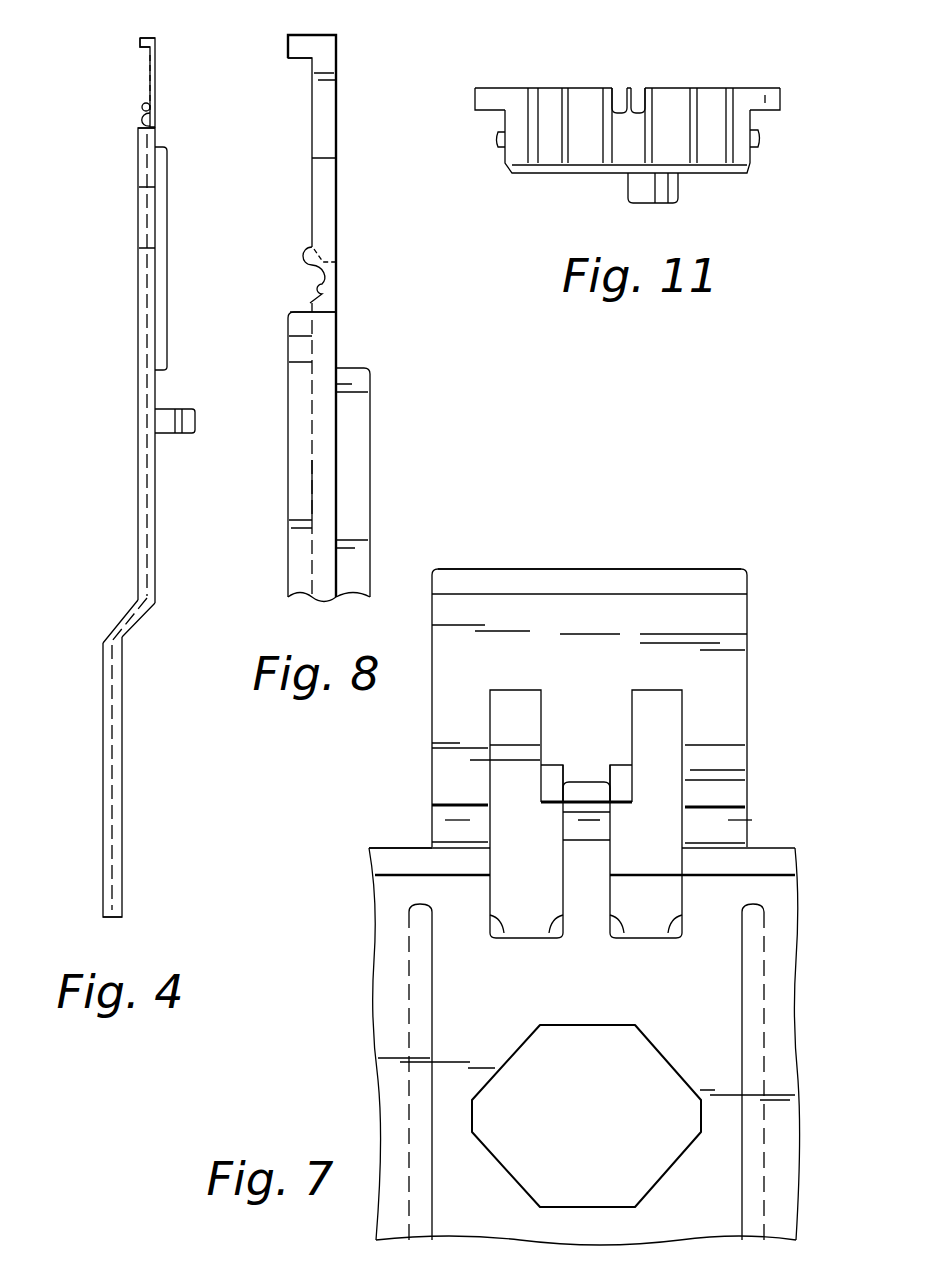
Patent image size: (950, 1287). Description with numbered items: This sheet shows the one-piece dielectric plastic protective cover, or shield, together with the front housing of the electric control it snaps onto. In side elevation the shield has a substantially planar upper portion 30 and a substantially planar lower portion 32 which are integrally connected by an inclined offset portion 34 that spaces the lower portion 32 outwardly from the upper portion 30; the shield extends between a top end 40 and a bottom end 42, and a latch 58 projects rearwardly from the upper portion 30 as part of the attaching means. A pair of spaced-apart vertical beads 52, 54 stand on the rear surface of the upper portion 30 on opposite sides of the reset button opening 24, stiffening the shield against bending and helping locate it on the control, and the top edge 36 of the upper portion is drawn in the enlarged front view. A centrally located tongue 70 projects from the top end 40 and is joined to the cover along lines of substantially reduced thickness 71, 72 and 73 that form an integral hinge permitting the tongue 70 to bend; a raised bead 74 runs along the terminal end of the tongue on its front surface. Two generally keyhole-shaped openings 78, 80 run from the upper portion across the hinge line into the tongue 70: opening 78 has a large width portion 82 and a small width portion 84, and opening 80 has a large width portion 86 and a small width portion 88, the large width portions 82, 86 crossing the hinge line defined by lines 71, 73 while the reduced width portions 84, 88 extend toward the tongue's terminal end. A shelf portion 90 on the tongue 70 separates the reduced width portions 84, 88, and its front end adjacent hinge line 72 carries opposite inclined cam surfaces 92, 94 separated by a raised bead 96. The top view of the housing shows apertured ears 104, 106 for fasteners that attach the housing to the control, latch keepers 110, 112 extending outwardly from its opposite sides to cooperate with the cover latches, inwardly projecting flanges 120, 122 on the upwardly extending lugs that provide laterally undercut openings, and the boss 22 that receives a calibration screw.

In FIG. 11, the boss 22 is at (662, 204).
In FIG. 8, the opening 24 is at (315, 490).
In FIG. 7, the opening 24 is at (660, 1052).
In FIG. 4, the upper portion 30 is at (138, 255).
In FIG. 8, the upper portion 30 is at (288, 380).
In FIG. 7, the upper portion 30 is at (785, 925).
In FIG. 4, the lower portion 32 is at (103, 738).
In FIG. 4, the inclined offset portion 34 is at (118, 625).
In FIG. 7, the top edge of strip 36 is at (775, 867).
In FIG. 4, the top end 40 is at (138, 128).
In FIG. 8, the top end 40 is at (298, 310).
In FIG. 7, the top end 40 is at (385, 845).
In FIG. 4, the bottom end 42 is at (112, 918).
In FIG. 7, the vertical bead 52 is at (420, 980).
In FIG. 4, the vertical bead 54 is at (168, 182).
In FIG. 8, the vertical bead 54 is at (355, 417).
In FIG. 7, the vertical bead 54 is at (752, 1040).
In FIG. 4, the latch 58 is at (190, 434).
In FIG. 4, the tongue 70 is at (153, 70).
In FIG. 8, the tongue 70 is at (337, 97).
In FIG. 7, the tongue 70 is at (735, 629).
In FIG. 7, the line of reduced thickness 71 is at (440, 822).
In FIG. 7, the line of reduced thickness 72 is at (582, 843).
In FIG. 4, the line of reduced thickness 73 is at (145, 122).
In FIG. 8, the line of reduced thickness 73 is at (326, 292).
In FIG. 7, the line of reduced thickness 73 is at (730, 833).
In FIG. 4, the raised bead 74 is at (140, 45).
In FIG. 8, the raised bead 74 is at (288, 55).
In FIG. 7, the raised bead 74 is at (585, 580).
In FIG. 7, the keyhole-shaped opening 78 is at (498, 925).
In FIG. 7, the keyhole-shaped opening 80 is at (673, 925).
In FIG. 7, the large width portion 82 is at (555, 925).
In FIG. 7, the small width portion 84 is at (492, 715).
In FIG. 7, the large width portion 86 is at (616, 925).
In FIG. 7, the small width portion 88 is at (678, 730).
In FIG. 7, the shelf portion 90 is at (542, 731).
In FIG. 7, the inclined cam surface 92 is at (550, 780).
In FIG. 7, the inclined cam surface 94 is at (625, 780).
In FIG. 4, the raised bead 96 is at (142, 105).
In FIG. 8, the raised bead 96 is at (305, 252).
In FIG. 7, the raised bead 96 is at (583, 792).
In FIG. 11, the apertured ear 104 is at (472, 102).
In FIG. 11, the apertured ear 106 is at (782, 100).
In FIG. 11, the latch keeper 110 is at (497, 140).
In FIG. 11, the latch keeper 112 is at (760, 140).
In FIG. 11, the inwardly projecting flange 120 is at (618, 103).
In FIG. 11, the inwardly projecting flange 122 is at (640, 103).